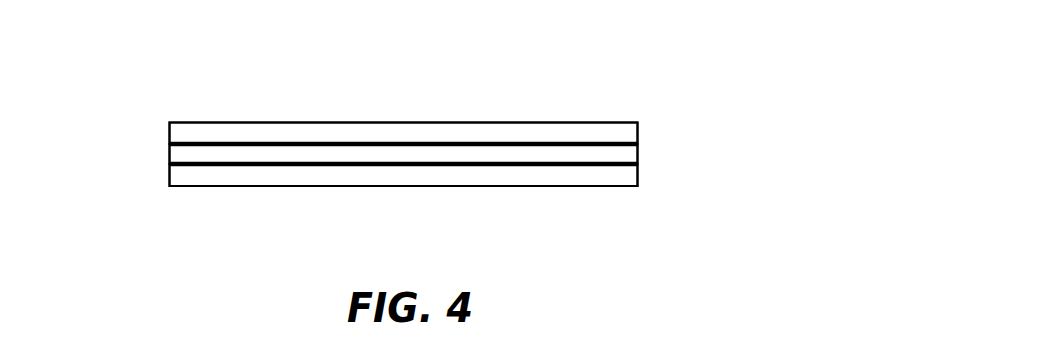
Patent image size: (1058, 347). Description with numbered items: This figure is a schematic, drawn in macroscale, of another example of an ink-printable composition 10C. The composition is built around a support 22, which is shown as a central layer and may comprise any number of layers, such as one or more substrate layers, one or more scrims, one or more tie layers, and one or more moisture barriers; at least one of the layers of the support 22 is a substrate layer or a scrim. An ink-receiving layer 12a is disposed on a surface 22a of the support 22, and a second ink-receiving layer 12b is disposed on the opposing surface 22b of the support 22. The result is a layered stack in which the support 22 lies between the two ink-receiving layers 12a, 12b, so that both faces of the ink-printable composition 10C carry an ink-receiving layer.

The ink-printable composition 10C is at (778, 155).
The ink-receiving layer 12a is at (577, 122).
The ink-receiving layer 12b is at (640, 173).
The support 22 is at (170, 148).
The surface 22a is at (287, 143).
The opposing surface 22b is at (537, 166).